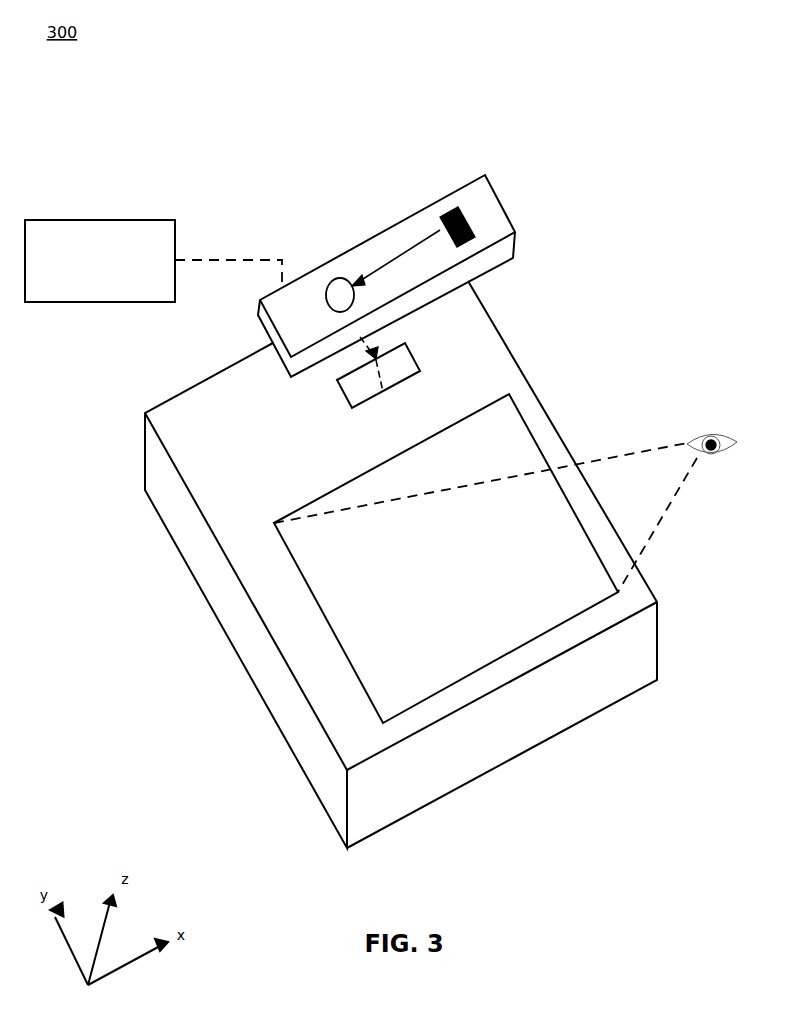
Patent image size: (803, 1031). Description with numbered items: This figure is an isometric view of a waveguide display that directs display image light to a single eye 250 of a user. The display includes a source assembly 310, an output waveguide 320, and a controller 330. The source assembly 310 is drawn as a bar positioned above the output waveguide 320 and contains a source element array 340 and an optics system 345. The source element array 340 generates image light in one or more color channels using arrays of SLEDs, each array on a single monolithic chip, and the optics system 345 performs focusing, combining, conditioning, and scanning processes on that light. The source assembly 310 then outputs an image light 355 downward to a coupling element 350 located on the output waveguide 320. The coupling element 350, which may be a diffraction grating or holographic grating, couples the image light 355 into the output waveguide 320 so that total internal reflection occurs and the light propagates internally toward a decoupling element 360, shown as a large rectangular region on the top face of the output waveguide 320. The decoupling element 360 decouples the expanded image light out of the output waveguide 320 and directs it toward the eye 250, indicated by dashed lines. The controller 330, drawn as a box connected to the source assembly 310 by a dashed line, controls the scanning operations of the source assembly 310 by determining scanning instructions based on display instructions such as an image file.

The source assembly 310 is at (508, 216).
The output waveguide 320 is at (282, 655).
The controller 330 is at (153, 261).
The source element array 340 is at (448, 207).
The optics system 345 is at (338, 290).
The coupling element 350 is at (418, 370).
The image light 355 is at (378, 359).
The decoupling element 360 is at (377, 710).
The eye 250 is at (712, 429).